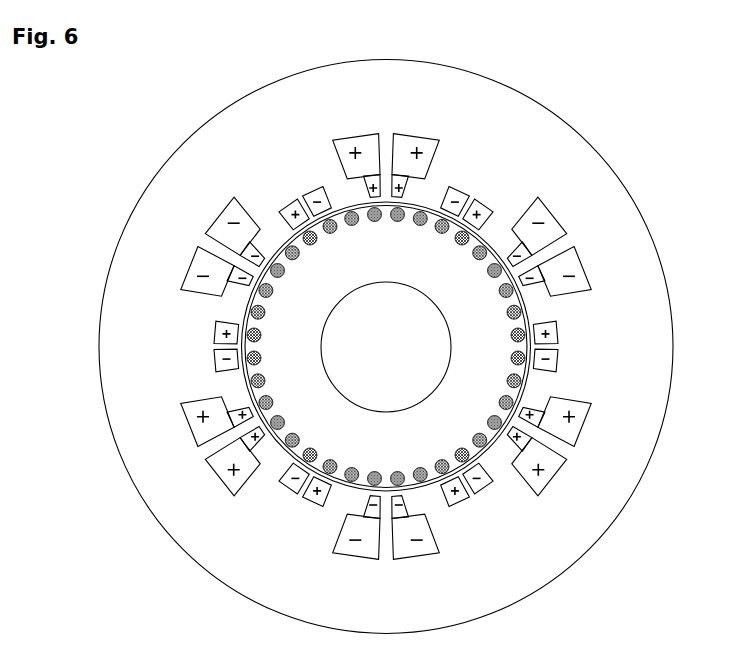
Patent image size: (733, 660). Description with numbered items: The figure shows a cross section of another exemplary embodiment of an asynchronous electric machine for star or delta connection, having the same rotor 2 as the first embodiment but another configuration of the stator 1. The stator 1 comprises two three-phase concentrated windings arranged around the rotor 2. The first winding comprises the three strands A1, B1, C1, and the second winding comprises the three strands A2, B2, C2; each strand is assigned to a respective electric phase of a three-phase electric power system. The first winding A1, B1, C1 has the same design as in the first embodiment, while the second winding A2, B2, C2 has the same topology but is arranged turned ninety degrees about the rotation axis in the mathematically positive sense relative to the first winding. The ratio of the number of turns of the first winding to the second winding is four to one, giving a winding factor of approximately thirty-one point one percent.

The stator 1 is at (544, 142).
The rotor 2 is at (396, 263).
The strand A1 of the first winding A1 is at (387, 346).
The strand A2 of the second winding A2 is at (386, 347).
The strand B1 of the first winding B1 is at (387, 344).
The strand B2 of the second winding B2 is at (386, 346).
The strand C1 of the first winding C1 is at (390, 344).
The strand C2 of the second winding C2 is at (386, 346).